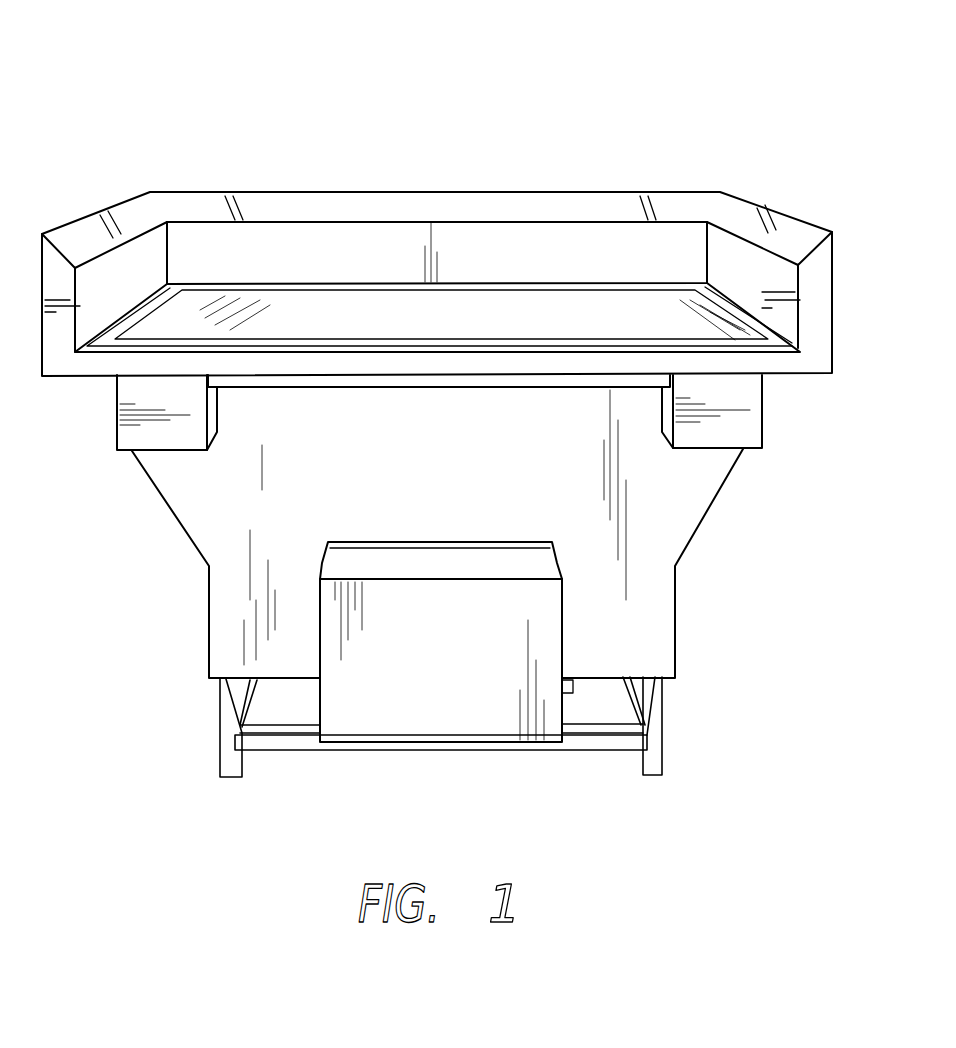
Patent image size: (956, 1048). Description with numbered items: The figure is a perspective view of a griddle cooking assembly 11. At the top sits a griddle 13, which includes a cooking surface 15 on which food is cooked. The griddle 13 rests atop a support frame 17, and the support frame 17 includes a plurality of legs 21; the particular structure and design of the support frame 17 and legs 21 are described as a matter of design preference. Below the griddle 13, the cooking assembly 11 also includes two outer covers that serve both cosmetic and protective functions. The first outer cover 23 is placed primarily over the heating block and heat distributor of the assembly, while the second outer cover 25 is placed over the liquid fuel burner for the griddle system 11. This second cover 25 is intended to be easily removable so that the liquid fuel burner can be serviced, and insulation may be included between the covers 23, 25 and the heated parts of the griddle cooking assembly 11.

The griddle cooking assembly 11 is at (136, 132).
The griddle 13 is at (562, 203).
The cooking surface 15 is at (727, 322).
The first outer cover 23 is at (668, 530).
The second outer cover 25 is at (447, 702).
The support frame 17 is at (605, 743).
The legs 21 is at (230, 742).